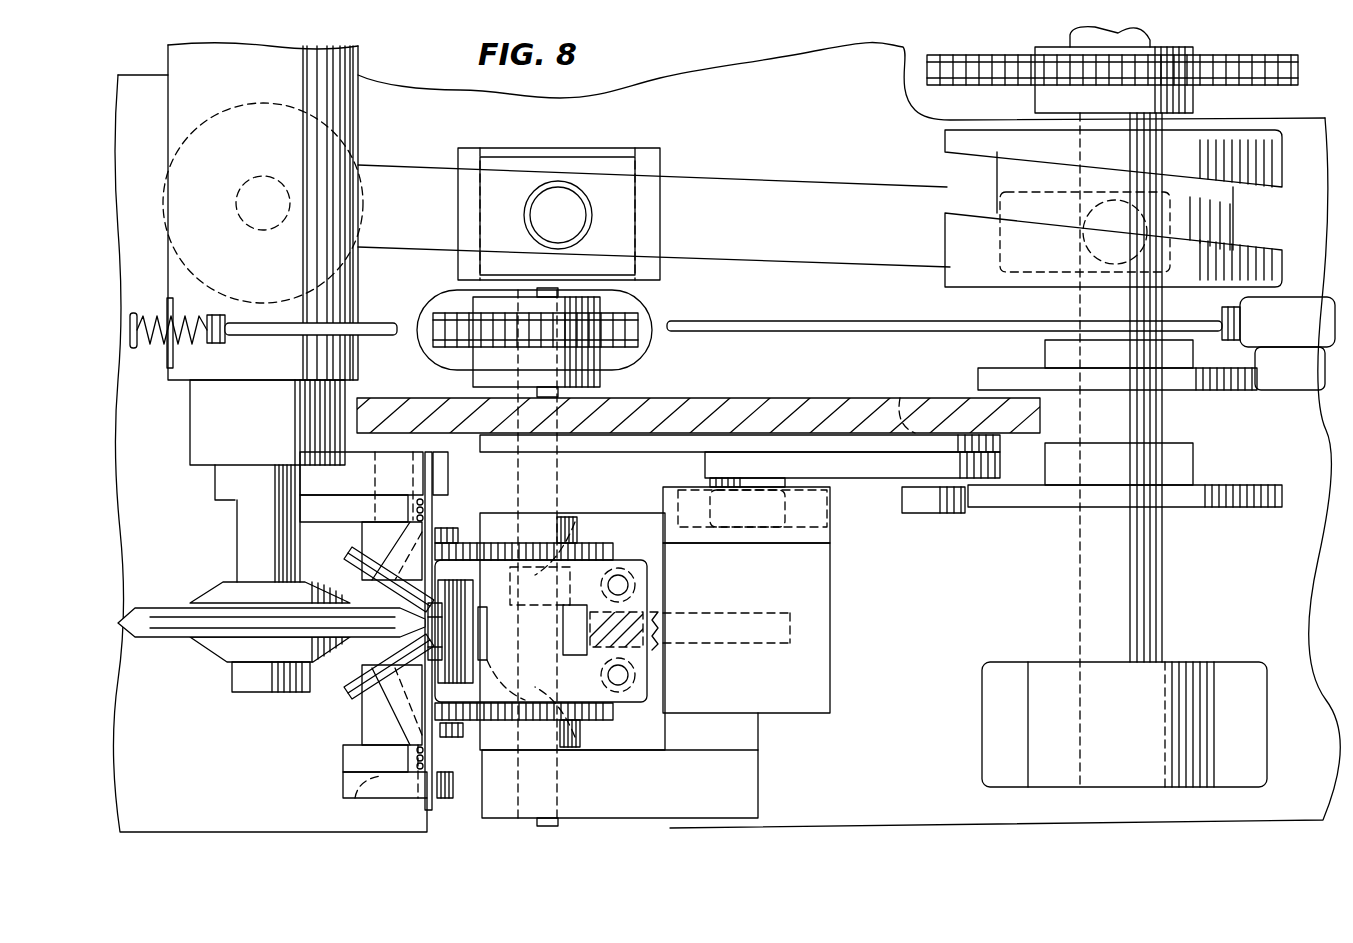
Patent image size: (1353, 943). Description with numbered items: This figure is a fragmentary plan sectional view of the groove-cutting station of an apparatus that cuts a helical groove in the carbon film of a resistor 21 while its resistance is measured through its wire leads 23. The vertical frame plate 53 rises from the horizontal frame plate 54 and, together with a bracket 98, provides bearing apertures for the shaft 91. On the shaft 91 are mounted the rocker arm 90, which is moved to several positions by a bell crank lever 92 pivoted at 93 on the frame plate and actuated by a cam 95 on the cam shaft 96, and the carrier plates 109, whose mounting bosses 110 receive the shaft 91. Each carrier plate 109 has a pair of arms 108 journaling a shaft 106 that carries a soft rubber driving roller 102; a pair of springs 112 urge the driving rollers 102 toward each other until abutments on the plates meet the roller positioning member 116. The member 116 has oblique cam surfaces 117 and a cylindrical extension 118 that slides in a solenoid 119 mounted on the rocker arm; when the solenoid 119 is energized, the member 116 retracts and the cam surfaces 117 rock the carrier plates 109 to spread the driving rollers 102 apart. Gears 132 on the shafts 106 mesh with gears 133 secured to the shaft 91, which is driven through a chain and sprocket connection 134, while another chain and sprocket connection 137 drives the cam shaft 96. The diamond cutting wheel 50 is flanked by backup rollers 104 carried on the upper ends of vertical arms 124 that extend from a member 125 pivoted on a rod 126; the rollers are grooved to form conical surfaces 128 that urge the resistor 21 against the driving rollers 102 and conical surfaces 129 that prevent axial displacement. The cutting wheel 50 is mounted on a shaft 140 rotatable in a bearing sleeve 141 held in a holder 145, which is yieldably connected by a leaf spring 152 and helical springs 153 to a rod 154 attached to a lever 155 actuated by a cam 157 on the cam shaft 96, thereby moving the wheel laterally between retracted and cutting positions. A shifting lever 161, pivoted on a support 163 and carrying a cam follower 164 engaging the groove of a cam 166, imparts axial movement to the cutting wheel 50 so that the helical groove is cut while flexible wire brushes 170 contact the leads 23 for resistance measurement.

The resistor 21 is at (425, 638).
The wire leads 23 is at (432, 805).
The diamond cutting wheel 50 is at (162, 620).
The vertical frame plate 53 is at (715, 405).
The horizontal frame plate 54 is at (725, 88).
The rocker arm 90 is at (820, 548).
The shaft 91 is at (565, 394).
The bell crank lever 92 is at (860, 470).
The pivot 93 is at (900, 398).
The cam 95 is at (1215, 495).
The cam shaft 96 is at (1145, 548).
The bracket 98 is at (635, 806).
The driving rollers 102 is at (470, 634).
The backup rollers 104 is at (320, 590).
The shafts 106 is at (515, 592).
The arms 108 is at (490, 545).
The carrier plate 109 is at (640, 600).
The mounting bosses 110 is at (580, 545).
The springs 112 is at (640, 580).
The roller positioning member 116 is at (490, 668).
The oblique cam surfaces 117 is at (487, 625).
The cylindrical extension 118 is at (645, 634).
The solenoid 119 is at (810, 660).
The arms 124 is at (300, 520).
The member 125 is at (345, 648).
The rod 126 is at (360, 795).
The conical surfaces 128 is at (335, 560).
The conical surfaces 129 is at (380, 556).
The gears 132 is at (455, 540).
The gears 133 is at (560, 552).
The chain and sprocket connection 134 is at (615, 316).
The chain and sprocket connection 137 is at (1210, 58).
The shaft 140 is at (250, 512).
The bearing sleeve 141 is at (205, 430).
The holder 145 is at (215, 65).
The leaf spring 152 is at (175, 355).
The helical springs 153 is at (195, 310).
The rod 154 is at (372, 326).
The lever 155 is at (1295, 305).
The cam 157 is at (1180, 376).
The shifting lever 161 is at (400, 185).
The support 163 is at (608, 160).
The cam follower 164 is at (1090, 212).
The cam 166 is at (945, 135).
The flexible wire brushes 170 is at (408, 518).